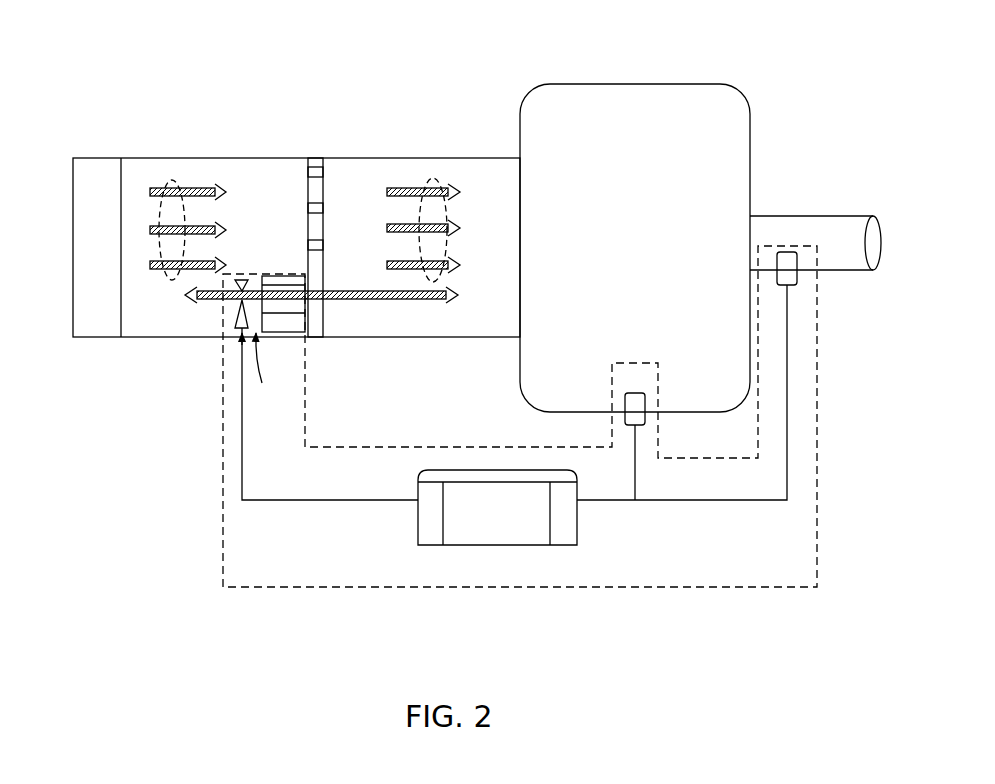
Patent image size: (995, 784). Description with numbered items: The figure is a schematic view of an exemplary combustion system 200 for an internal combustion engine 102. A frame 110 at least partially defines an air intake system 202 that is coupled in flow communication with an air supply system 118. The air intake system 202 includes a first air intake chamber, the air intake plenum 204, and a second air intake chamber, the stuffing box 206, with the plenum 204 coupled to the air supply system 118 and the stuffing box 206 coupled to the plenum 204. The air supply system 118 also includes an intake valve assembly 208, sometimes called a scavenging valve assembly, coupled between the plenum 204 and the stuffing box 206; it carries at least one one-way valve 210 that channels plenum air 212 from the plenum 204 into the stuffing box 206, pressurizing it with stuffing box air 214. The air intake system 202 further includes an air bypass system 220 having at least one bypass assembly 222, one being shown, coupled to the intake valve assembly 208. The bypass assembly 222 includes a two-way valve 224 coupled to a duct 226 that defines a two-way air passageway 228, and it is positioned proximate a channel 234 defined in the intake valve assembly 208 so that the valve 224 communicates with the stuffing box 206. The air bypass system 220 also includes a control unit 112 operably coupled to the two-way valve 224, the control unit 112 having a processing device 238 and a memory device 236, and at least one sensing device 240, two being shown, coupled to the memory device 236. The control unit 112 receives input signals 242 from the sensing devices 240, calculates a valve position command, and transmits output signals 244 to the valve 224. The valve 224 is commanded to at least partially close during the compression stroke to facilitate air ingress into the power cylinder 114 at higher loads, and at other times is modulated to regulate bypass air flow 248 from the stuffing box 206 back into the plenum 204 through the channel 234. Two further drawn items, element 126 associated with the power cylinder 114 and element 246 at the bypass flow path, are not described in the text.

The internal combustion engine 102 is at (127, 42).
The combustion system 200 is at (217, 98).
The frame 110 is at (128, 158).
The air supply system 118 is at (92, 338).
The air intake plenum 204 is at (267, 173).
The stuffing box 206 is at (454, 168).
The plenum air 212 is at (165, 162).
The stuffing box air 214 is at (418, 215).
The air intake system 202 is at (307, 138).
The one-way valve 210 is at (320, 158).
The intake valve assembly 208 is at (334, 316).
The channel 234 is at (334, 288).
The bypass outlet 246 is at (438, 300).
The bypass air flow 248 is at (190, 300).
The duct 226 is at (270, 276).
The two-way valve 224 is at (237, 322).
The bypass assembly 222 is at (277, 369).
The two-way air passageway 228 is at (278, 308).
The power cylinder 114 is at (652, 244).
The return air duct 126 is at (800, 216).
The sensing device 240 is at (790, 270).
The input signals 242 is at (665, 502).
The output signals 244 is at (245, 500).
The control unit 112 is at (499, 556).
The memory device 236 is at (430, 515).
The processing device 238 is at (565, 515).
The air bypass system 220 is at (258, 590).